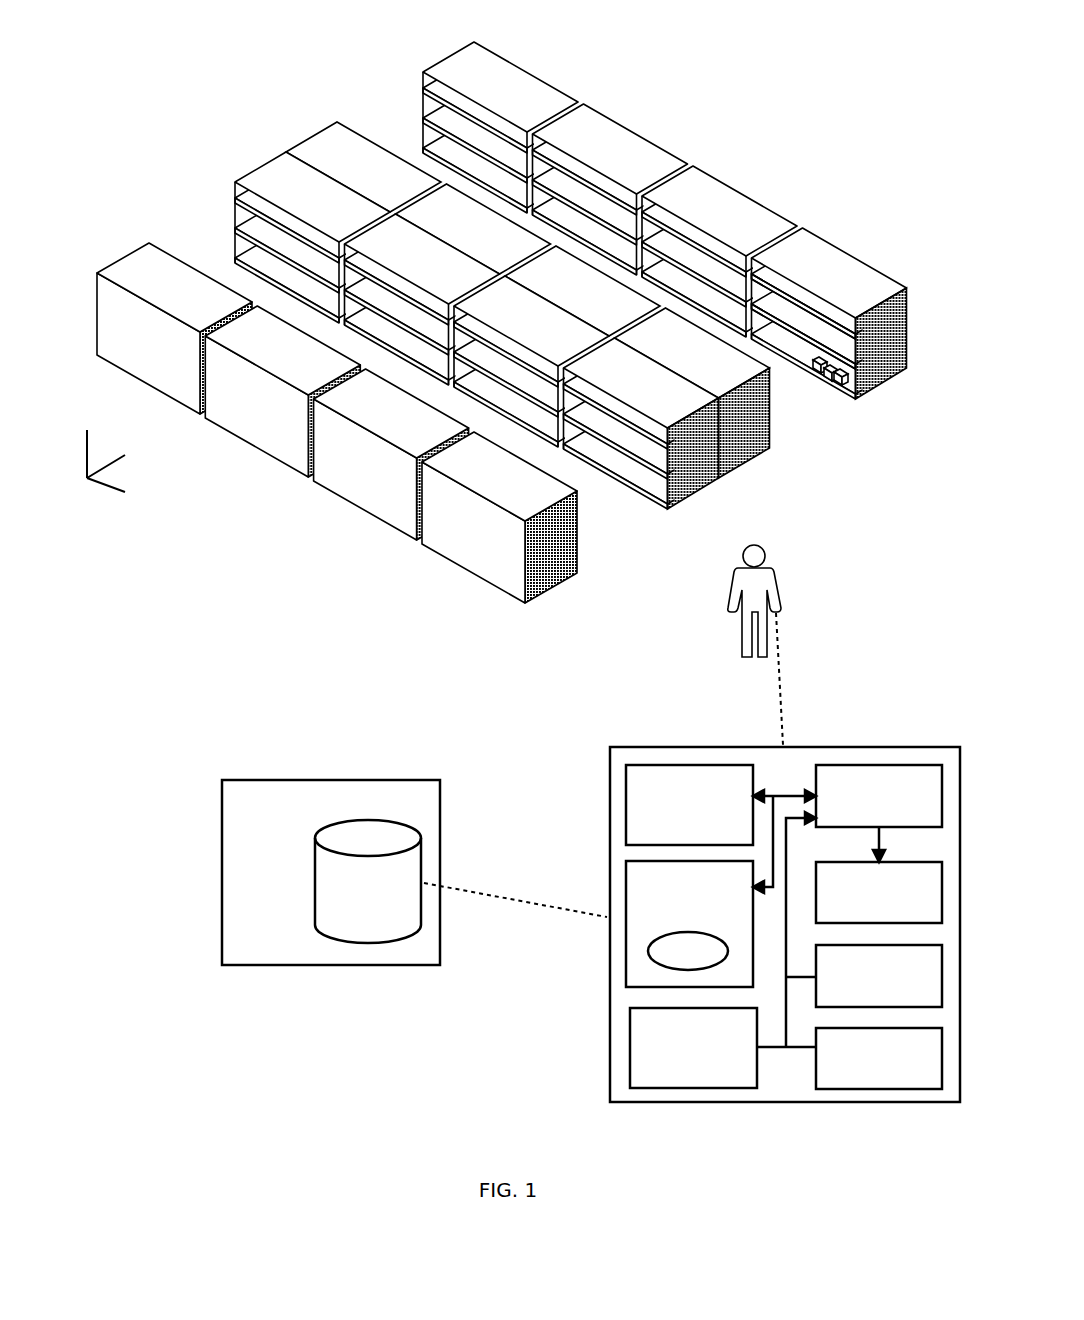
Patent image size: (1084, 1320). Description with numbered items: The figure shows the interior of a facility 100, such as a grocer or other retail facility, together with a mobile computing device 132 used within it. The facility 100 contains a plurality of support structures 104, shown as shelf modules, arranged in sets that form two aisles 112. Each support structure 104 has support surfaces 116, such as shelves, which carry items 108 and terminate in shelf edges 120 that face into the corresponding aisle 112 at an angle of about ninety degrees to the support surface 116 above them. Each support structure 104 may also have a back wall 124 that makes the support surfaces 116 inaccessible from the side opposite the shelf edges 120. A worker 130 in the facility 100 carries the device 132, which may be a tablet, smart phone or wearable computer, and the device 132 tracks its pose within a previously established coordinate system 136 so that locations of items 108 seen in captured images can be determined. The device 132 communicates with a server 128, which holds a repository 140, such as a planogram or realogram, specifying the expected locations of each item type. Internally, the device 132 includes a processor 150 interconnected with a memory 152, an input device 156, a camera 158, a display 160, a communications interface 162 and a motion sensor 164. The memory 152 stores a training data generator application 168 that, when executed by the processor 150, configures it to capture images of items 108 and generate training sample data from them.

The facility 100 is at (792, 135).
The support structure 104 is at (522, 306).
The items 108 is at (850, 380).
The aisle 112 is at (593, 517).
The support surface 116 is at (778, 287).
The shelf edge 120 is at (813, 313).
The back wall 124 is at (462, 548).
The server 128 is at (331, 872).
The worker 130 is at (772, 577).
The mobile computing device 132 is at (905, 747).
The coordinate system 136 is at (87, 488).
The repository 140 is at (368, 881).
The processor 150 is at (879, 796).
The memory 152 is at (689, 924).
The input device 156 is at (879, 1058).
The camera 158 is at (879, 976).
The display 160 is at (879, 892).
The communications interface 162 is at (689, 805).
The motion sensor 164 is at (693, 1048).
The training data generator application 168 is at (688, 951).